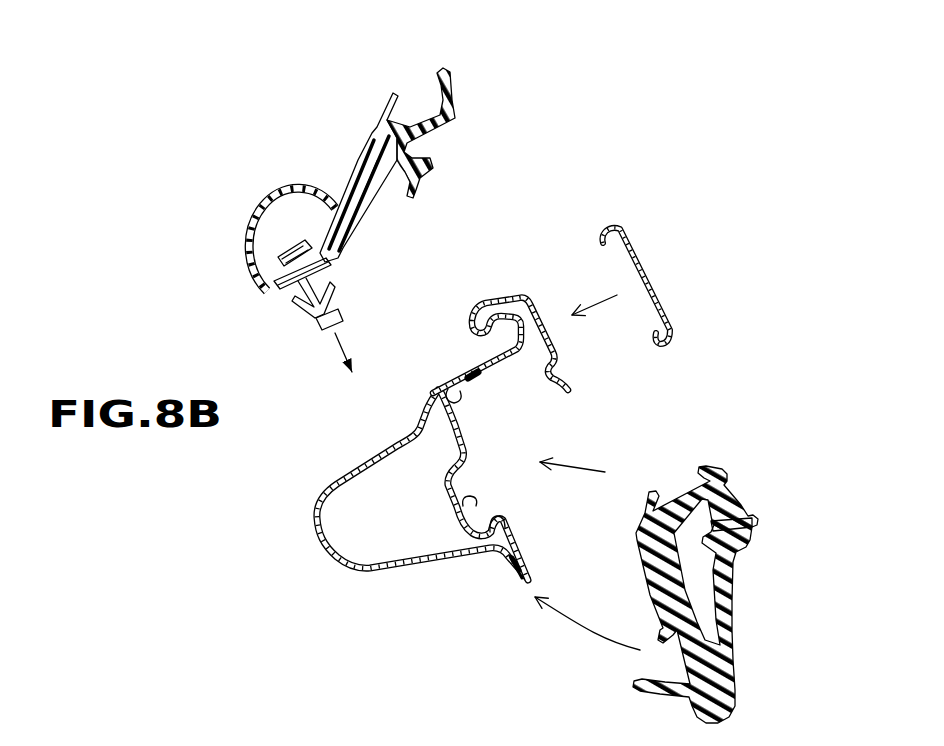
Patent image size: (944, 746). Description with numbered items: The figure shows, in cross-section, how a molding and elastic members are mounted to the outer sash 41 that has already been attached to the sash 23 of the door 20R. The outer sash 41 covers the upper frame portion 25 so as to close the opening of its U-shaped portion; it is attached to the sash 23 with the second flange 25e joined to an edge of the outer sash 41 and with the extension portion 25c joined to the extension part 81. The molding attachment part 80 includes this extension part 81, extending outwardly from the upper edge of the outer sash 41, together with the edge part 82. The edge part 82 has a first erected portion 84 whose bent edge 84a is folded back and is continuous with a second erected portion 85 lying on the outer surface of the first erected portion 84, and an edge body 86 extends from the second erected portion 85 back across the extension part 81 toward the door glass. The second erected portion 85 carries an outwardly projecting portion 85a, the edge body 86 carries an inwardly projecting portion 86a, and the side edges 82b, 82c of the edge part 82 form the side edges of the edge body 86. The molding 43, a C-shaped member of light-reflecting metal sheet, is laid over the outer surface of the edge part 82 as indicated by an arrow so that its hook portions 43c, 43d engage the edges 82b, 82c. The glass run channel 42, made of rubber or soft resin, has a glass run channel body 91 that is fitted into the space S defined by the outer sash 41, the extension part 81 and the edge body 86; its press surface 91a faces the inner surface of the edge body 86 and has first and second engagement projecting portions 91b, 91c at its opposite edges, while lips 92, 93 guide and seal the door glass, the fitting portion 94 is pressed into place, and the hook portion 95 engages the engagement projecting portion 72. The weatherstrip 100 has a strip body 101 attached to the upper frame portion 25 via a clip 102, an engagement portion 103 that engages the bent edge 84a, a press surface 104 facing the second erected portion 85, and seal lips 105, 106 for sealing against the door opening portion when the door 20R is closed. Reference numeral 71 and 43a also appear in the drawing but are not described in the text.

The door 20R is at (290, 527).
The upper frame portion 25 is at (330, 563).
The sash 23 is at (397, 535).
The outer sash 41 is at (452, 442).
The engagement tab 71 is at (475, 500).
The engagement projecting portion 72 is at (500, 517).
The second flange 25e is at (513, 580).
The extension portion 25c is at (460, 372).
The molding attachment part 80 is at (583, 375).
The extension part 81 is at (440, 387).
The first erected portion 84 is at (501, 310).
The second erected portion 85 is at (503, 300).
The projecting portion 85a is at (470, 303).
The bent edge 84a is at (477, 332).
The edge 82b is at (515, 297).
The edge part 82 is at (541, 310).
The edge body 86 is at (557, 350).
The projecting portion 86a is at (548, 377).
The edge 82c is at (569, 393).
The molding 43 is at (652, 263).
The rod straight portion 43a is at (665, 295).
The hook portion 43c is at (613, 227).
The hook portion 43d is at (675, 343).
The glass run channel 42 is at (853, 507).
The glass run channel body 91 is at (688, 503).
The press surface 91a is at (735, 500).
The first engagement projecting portion 91b is at (725, 470).
The second engagement projecting portion 91c is at (760, 523).
The lip 92 is at (735, 548).
The lip 93 is at (730, 580).
The fitting portion 94 is at (702, 697).
The hook portion 95 is at (657, 633).
The space S is at (586, 475).
The weatherstrip 100 is at (230, 253).
The strip body 101 is at (340, 200).
The clip 102 is at (309, 312).
The engagement portion 103 is at (437, 163).
The press surface 104 is at (432, 133).
The seal lip 105 is at (388, 95).
The seal lip 106 is at (444, 68).